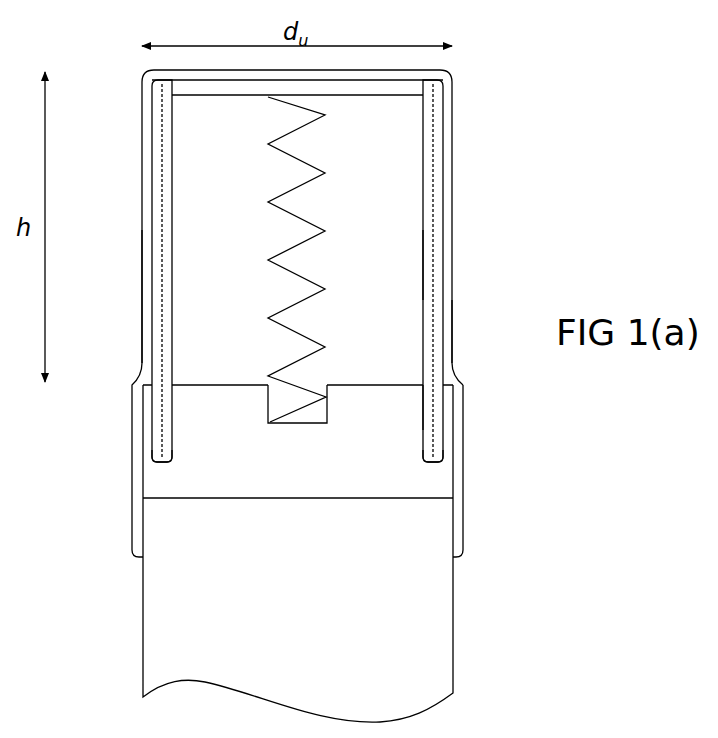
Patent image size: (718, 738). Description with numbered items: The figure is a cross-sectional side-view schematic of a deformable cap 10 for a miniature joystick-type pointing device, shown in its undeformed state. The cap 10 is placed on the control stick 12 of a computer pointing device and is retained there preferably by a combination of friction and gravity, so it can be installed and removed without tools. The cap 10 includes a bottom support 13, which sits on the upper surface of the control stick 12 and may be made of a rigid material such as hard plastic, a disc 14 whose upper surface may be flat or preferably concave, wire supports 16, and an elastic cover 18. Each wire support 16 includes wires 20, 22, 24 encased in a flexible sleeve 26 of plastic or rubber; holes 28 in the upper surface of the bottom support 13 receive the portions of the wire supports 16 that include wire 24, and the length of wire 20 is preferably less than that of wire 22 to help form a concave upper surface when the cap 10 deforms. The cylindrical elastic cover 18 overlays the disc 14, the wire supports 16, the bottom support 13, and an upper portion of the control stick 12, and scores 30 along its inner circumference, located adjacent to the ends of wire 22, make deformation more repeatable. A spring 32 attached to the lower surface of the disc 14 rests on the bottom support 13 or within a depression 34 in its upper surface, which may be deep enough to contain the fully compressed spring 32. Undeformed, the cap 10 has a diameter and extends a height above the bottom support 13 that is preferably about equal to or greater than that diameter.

The cap 10 is at (492, 83).
The control stick 12 is at (415, 651).
The bottom support 13 is at (415, 491).
The disc 14 is at (182, 88).
The wire supports 16 is at (142, 167).
The elastic cover 18 is at (150, 208).
The wire 20 is at (433, 123).
The wire 22 is at (433, 265).
The wire 24 is at (433, 405).
The flexible sleeve 26 is at (444, 192).
The holes 28 is at (162, 463).
The scores 30 is at (147, 380).
The spring 32 is at (298, 273).
The depression 34 is at (268, 410).